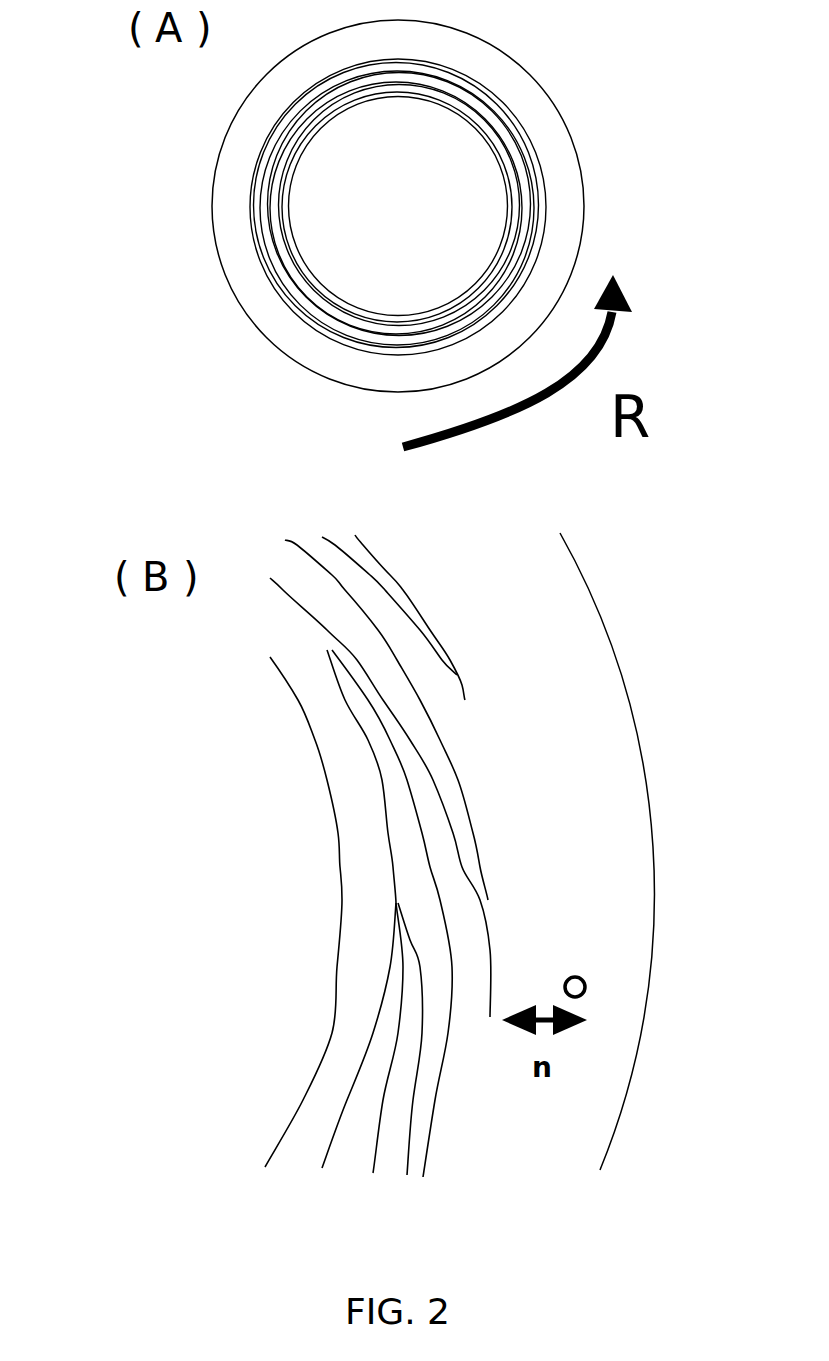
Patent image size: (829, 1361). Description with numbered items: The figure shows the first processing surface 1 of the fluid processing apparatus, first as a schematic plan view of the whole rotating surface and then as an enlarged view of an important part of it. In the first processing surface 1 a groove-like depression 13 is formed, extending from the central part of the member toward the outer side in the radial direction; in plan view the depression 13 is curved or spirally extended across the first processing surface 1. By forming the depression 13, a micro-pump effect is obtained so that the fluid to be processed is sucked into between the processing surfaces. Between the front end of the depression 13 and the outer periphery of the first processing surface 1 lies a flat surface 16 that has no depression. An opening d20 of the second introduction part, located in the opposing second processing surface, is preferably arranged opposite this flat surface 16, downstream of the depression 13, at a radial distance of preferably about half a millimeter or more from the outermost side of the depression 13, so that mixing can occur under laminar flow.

The first processing surface 1 is at (272, 308).
The groove-like depression 13 is at (266, 245).
The flat surface 16 is at (513, 670).
The opening of the second introduction part d20 is at (583, 973).